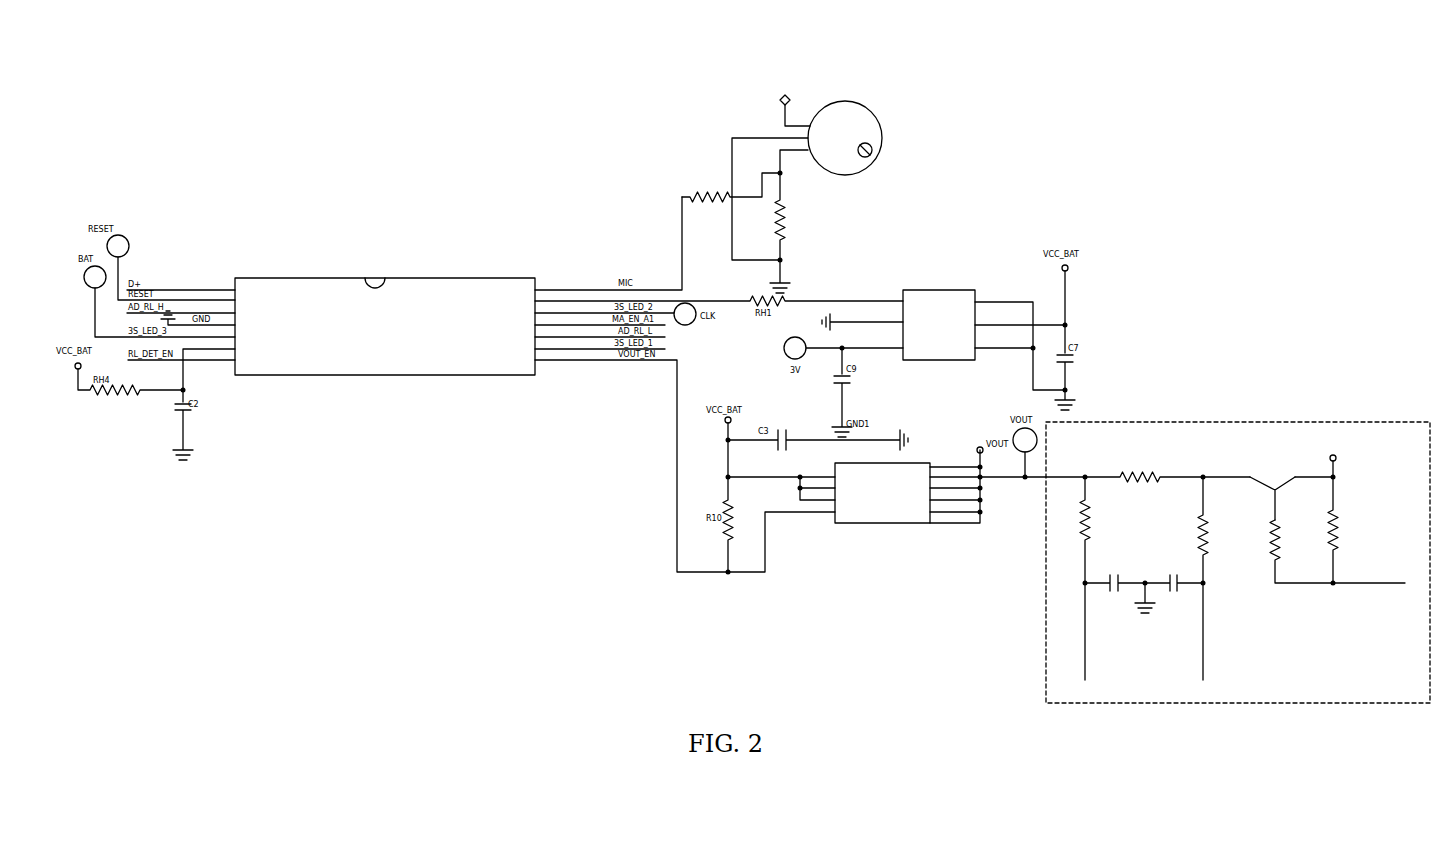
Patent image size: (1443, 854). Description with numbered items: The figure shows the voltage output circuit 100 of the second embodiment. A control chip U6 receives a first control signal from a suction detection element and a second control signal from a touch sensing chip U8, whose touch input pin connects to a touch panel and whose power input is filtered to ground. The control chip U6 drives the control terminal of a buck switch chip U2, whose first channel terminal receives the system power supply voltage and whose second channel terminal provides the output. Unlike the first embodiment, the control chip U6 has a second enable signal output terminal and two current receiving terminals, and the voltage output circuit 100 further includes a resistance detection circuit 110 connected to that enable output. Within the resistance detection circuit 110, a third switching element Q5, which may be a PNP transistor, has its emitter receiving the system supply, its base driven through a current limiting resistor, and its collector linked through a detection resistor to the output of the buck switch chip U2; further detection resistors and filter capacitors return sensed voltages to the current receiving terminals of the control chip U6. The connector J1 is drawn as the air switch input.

The voltage output circuit 100 is at (740, 83).
The resistance detection circuit 110 is at (1185, 435).
The control chip U6 is at (383, 326).
The touch sensing chip U8 is at (938, 326).
The buck switch chip U2 is at (889, 494).
The air switch connector J1 is at (839, 144).
The third switching element Q5 is at (1278, 486).